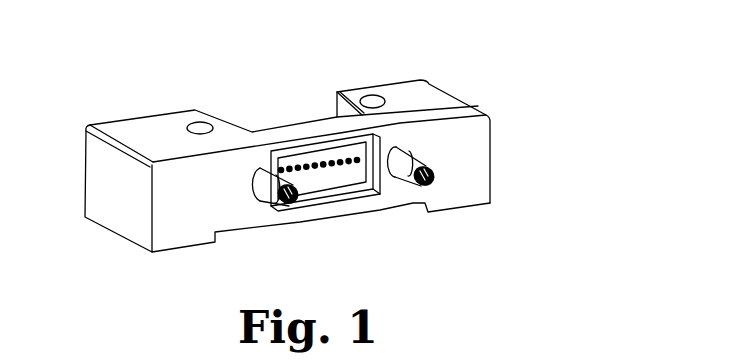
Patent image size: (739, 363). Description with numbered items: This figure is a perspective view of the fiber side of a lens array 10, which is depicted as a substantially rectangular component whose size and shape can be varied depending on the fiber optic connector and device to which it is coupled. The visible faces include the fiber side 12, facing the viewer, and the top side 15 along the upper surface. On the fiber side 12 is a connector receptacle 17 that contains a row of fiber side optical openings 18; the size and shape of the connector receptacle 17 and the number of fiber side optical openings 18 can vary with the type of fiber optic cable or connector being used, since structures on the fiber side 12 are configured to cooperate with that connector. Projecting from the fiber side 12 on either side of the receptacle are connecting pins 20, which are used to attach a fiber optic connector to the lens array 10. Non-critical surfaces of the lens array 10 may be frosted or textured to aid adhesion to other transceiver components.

The lens array 10 is at (530, 106).
The fiber side 12 is at (478, 185).
The top side 15 is at (160, 127).
The connector receptacle 17 is at (345, 172).
The fiber side optical openings 18 is at (300, 163).
The connecting pins 20 is at (413, 157).